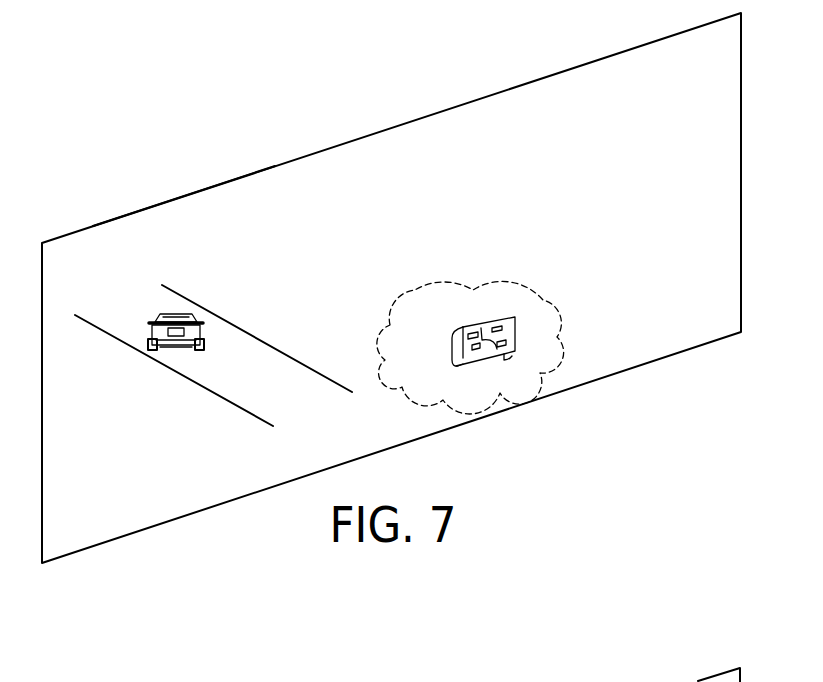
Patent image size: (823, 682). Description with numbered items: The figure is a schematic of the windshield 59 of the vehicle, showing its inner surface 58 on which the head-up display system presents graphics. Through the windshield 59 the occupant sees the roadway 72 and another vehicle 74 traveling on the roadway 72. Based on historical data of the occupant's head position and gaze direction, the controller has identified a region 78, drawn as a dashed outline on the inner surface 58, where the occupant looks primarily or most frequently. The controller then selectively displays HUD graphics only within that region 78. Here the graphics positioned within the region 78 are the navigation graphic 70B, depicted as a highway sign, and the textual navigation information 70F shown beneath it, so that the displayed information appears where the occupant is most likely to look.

The inner surface 58 is at (406, 212).
The windshield 59 is at (212, 180).
The roadway 72 is at (258, 337).
The another vehicle 74 is at (176, 313).
The region 78 is at (415, 290).
The navigation graphic 70B is at (483, 328).
The textual navigation information 70F is at (438, 392).